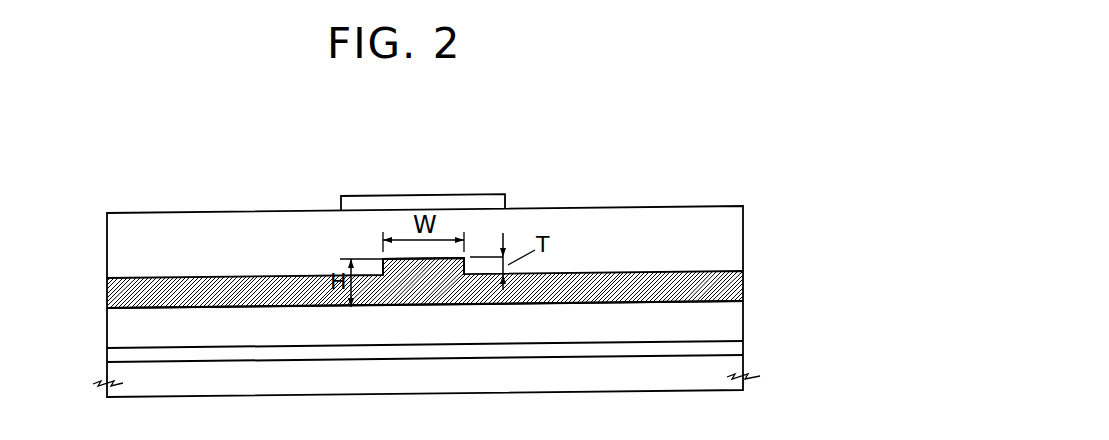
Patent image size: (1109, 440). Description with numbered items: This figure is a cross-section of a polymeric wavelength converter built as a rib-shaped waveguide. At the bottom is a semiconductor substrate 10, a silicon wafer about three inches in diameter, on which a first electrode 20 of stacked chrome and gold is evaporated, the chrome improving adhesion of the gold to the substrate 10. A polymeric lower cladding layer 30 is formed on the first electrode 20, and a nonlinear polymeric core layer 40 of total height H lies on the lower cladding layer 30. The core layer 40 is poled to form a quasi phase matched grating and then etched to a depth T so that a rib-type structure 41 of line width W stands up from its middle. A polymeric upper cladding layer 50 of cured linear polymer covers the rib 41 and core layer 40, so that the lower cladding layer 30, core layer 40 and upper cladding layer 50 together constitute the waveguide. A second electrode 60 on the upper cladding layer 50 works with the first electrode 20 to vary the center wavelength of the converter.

The semiconductor substrate 10 is at (730, 367).
The first electrode 20 is at (730, 347).
The polymeric lower cladding layer 30 is at (730, 325).
The nonlinear polymeric core layer 40 is at (743, 281).
The rib-type structure 41 is at (382, 261).
The polymeric upper cladding layer 50 is at (730, 242).
The second electrode 60 is at (458, 200).